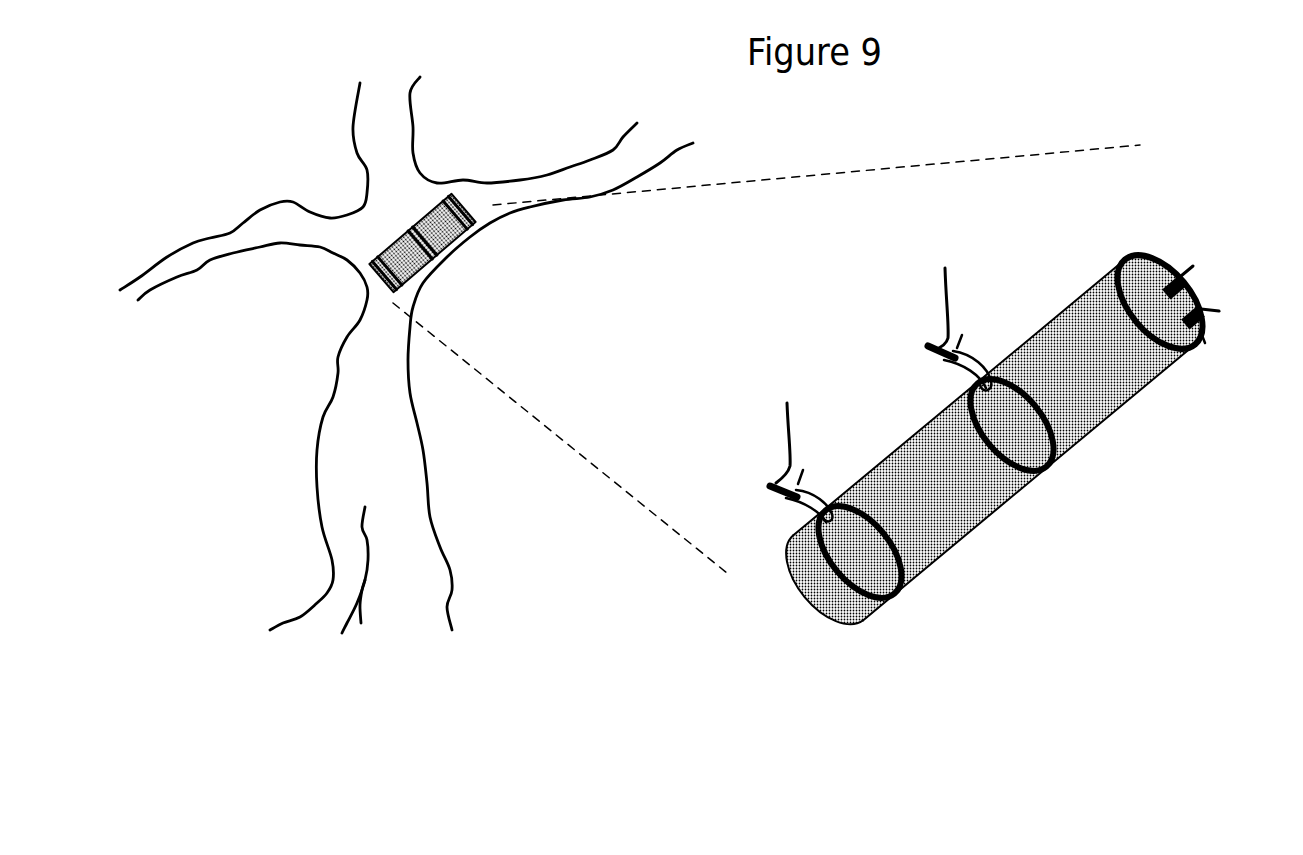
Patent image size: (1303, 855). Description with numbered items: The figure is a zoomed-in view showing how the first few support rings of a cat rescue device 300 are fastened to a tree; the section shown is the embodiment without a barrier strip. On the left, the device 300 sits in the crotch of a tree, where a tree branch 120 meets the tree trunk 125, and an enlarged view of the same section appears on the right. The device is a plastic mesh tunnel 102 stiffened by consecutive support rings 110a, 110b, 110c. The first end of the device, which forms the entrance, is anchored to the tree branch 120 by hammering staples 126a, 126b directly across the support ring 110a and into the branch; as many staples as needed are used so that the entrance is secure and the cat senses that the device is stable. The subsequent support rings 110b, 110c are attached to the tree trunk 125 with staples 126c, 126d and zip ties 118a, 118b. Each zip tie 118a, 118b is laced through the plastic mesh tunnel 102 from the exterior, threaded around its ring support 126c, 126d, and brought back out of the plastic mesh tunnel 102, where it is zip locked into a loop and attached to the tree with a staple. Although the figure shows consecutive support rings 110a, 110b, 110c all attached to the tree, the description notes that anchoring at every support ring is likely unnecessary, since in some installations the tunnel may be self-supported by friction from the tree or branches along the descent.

The plastic mesh tunnel 102 is at (785, 409).
The cat rescue device 300 is at (440, 273).
The tree branch 120 is at (533, 223).
The tree trunk 125 is at (367, 250).
The support ring 110a is at (1183, 347).
The support ring 110b is at (1050, 468).
The support ring 110c is at (900, 597).
The zip tie 118a is at (952, 288).
The zip tie 118b is at (783, 423).
The staple 126a is at (1187, 263).
The staple 126b is at (1220, 313).
The staple 126c is at (937, 328).
The staple 126d is at (777, 470).